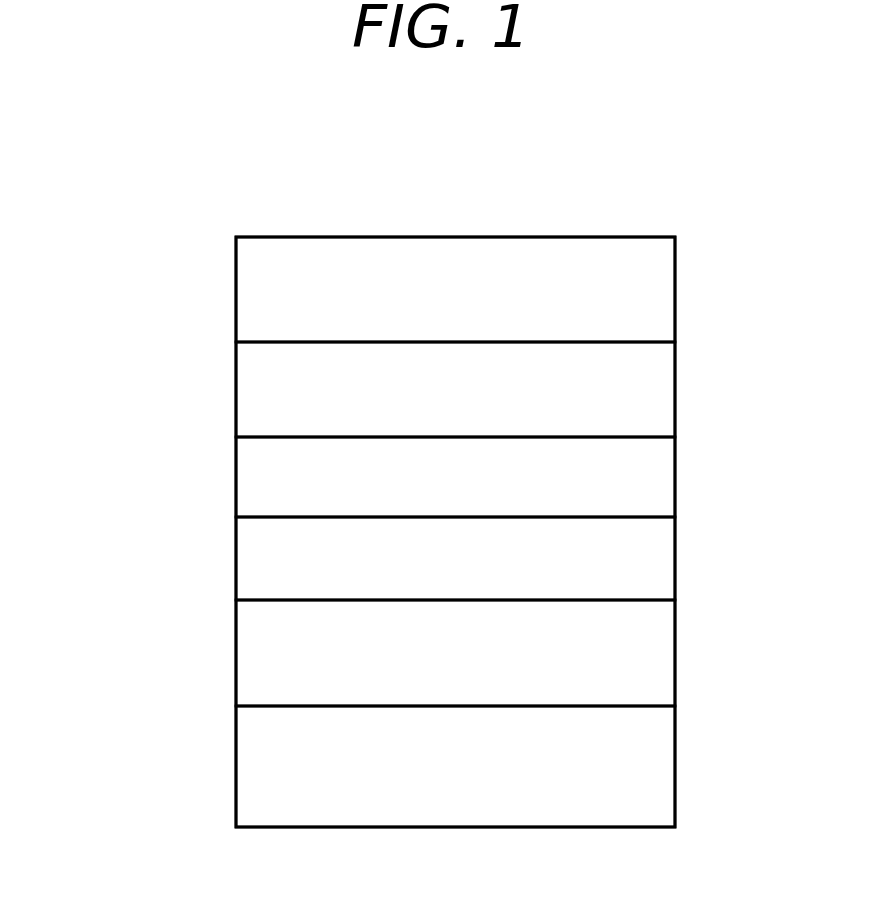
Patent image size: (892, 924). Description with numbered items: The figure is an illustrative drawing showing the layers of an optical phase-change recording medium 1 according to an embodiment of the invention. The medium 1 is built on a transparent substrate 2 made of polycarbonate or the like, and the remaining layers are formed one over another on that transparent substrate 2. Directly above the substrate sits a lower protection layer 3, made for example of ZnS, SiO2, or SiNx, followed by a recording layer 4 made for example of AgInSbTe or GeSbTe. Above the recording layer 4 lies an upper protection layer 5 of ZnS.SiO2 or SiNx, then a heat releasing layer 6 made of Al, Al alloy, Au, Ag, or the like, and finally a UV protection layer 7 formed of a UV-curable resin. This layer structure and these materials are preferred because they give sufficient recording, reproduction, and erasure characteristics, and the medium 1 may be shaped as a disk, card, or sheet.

The optical phase-change recording medium 1 is at (198, 262).
The transparent substrate 2 is at (660, 773).
The lower protection layer 3 is at (660, 657).
The recording layer 4 is at (654, 568).
The upper protection layer 5 is at (665, 487).
The heat releasing layer 6 is at (662, 398).
The UV protection layer 7 is at (665, 284).